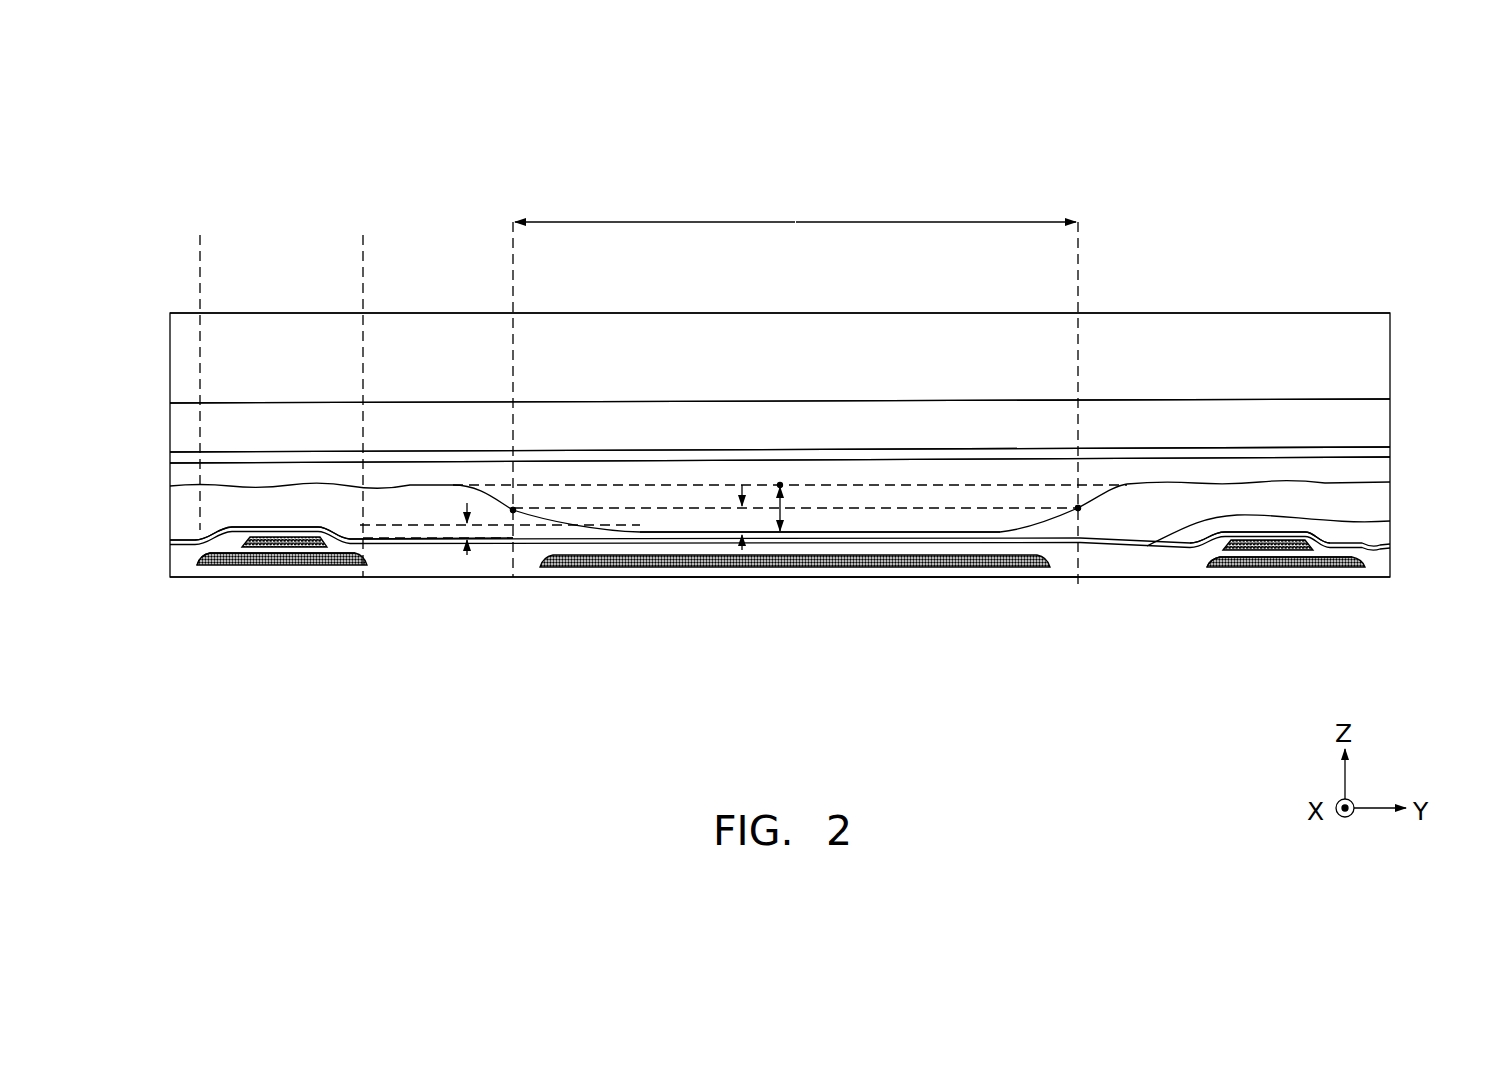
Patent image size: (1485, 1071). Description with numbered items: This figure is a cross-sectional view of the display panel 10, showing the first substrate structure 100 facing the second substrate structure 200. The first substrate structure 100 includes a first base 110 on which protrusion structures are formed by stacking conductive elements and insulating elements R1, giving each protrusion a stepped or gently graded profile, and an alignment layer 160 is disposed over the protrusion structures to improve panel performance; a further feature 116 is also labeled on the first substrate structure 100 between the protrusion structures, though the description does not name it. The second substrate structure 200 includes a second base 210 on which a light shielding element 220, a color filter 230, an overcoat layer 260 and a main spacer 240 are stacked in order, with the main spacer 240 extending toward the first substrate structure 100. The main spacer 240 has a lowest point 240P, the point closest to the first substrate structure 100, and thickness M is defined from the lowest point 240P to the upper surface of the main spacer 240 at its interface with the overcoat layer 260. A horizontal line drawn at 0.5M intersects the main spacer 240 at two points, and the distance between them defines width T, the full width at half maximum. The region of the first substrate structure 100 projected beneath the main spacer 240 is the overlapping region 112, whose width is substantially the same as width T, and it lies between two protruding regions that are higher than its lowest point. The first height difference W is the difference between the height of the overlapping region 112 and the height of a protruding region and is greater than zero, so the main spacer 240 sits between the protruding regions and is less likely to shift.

The display panel 10 is at (214, 138).
The first substrate structure 100 is at (1392, 562).
The first base 110 is at (1101, 567).
The overlapping region 112 is at (877, 604).
The spacer 116 is at (432, 544).
The alignment layer 160 is at (1390, 521).
The second substrate structure 200 is at (1369, 297).
The second base 210 is at (1372, 352).
The light shielding element 220 is at (1372, 424).
The color filter 230 is at (170, 454).
The main spacer 240 is at (931, 517).
The lowest point 240P is at (784, 535).
The overcoat layer 260 is at (1372, 466).
The insulating elements R1 is at (203, 542).
The width T is at (639, 391).
The thickness M is at (782, 486).
The half of the thickness 0.5M is at (741, 550).
The first height difference W is at (468, 555).